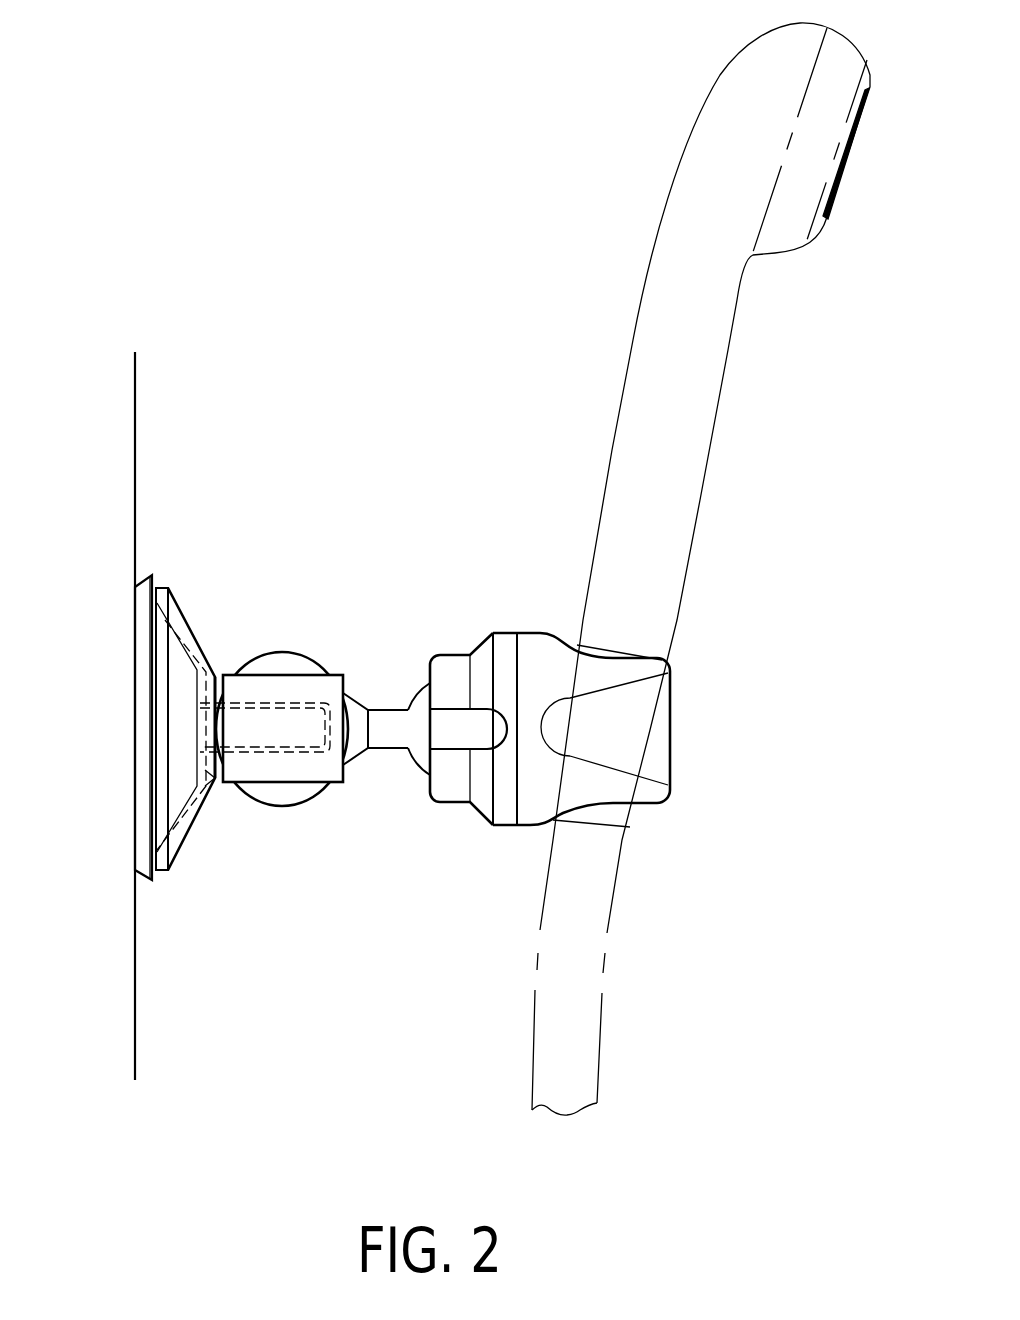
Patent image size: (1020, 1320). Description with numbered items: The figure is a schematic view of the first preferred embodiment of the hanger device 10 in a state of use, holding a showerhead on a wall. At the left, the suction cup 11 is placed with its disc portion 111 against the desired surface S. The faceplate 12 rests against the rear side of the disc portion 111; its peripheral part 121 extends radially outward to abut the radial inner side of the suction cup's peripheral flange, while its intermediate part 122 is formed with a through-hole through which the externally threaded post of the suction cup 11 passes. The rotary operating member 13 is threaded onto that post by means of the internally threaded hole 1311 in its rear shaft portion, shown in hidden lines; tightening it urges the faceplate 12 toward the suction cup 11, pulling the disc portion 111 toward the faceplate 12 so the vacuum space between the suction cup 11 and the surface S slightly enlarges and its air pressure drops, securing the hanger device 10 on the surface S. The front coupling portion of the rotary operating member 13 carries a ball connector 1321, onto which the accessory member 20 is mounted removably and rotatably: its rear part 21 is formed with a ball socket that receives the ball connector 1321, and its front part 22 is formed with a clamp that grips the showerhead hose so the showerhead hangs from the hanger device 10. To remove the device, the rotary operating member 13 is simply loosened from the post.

The surface S is at (135, 427).
The hanger device 10 is at (256, 724).
The suction cup 11 is at (214, 657).
The disc portion 111 is at (143, 805).
The faceplate 12 is at (186, 612).
The peripheral part 121 is at (160, 587).
The intermediate part 122 is at (218, 778).
The rotary operating member 13 is at (317, 770).
The internally threaded hole 1311 is at (268, 706).
The ball connector 1321 is at (418, 710).
The accessory member 20 is at (597, 791).
The rear part 21 is at (481, 725).
The front part 22 is at (620, 655).